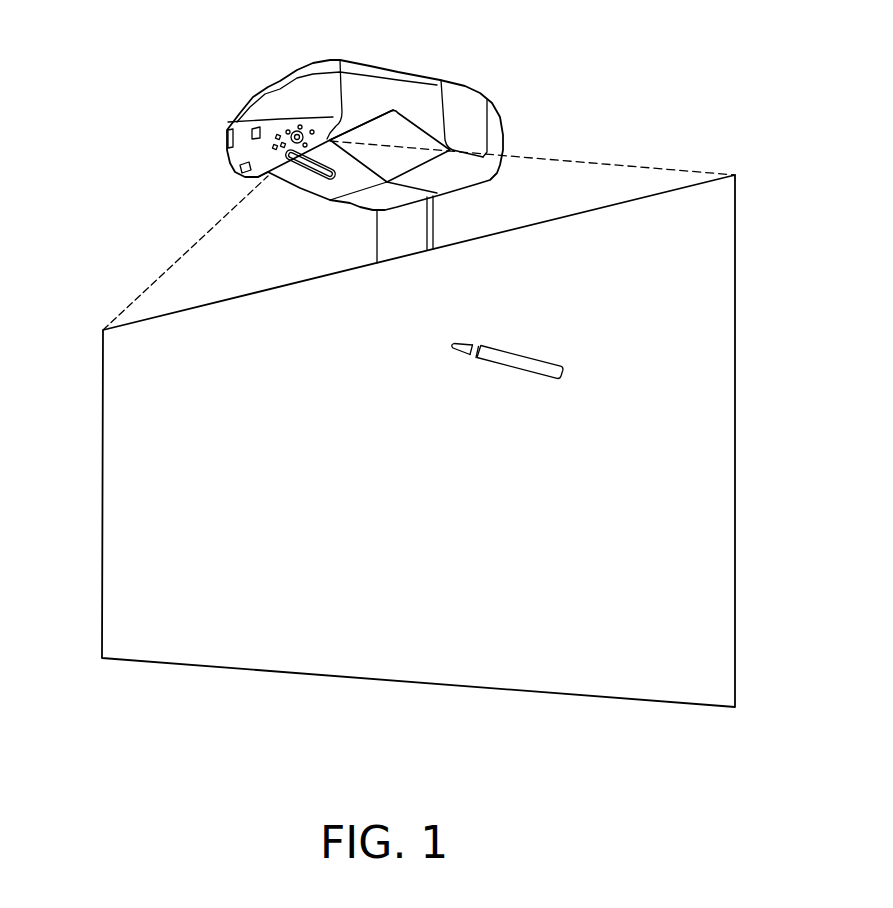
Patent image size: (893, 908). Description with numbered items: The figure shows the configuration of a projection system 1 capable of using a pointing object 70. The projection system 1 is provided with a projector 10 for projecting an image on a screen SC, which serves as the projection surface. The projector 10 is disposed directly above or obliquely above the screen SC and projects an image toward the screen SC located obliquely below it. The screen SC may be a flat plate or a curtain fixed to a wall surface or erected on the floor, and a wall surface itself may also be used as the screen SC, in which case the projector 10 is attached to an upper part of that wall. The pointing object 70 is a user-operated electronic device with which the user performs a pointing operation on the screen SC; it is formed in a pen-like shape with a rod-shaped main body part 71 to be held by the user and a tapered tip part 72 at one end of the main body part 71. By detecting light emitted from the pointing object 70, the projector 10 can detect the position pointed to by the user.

The projection system 1 is at (148, 93).
The projector 10 is at (398, 72).
The screen SC is at (102, 467).
The pointing object 70 is at (512, 352).
The main body part 71 is at (458, 343).
The tip part 72 is at (540, 378).